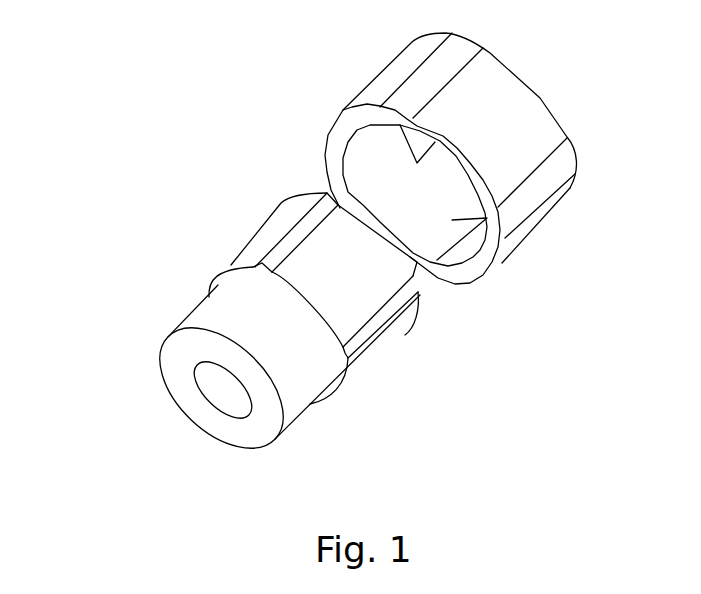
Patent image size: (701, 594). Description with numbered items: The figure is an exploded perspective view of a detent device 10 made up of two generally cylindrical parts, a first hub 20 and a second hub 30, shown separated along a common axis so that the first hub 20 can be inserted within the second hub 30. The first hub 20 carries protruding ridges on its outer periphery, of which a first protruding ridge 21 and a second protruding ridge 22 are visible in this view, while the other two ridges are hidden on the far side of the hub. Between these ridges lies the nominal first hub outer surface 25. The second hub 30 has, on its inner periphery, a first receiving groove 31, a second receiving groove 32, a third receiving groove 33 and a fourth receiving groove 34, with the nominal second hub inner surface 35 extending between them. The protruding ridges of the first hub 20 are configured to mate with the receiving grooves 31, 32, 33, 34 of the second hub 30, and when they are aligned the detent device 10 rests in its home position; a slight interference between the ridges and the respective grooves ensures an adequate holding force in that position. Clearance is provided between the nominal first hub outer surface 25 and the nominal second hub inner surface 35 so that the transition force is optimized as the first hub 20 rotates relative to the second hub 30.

The detent device 10 is at (186, 188).
The first hub 20 is at (359, 310).
The first protruding ridge 21 is at (280, 251).
The second protruding ridge 22 is at (357, 345).
The nominal first hub outer surface 25 is at (324, 280).
The second hub 30 is at (519, 145).
The first receiving groove 31 is at (437, 138).
The second receiving groove 32 is at (452, 220).
The third receiving groove 33 is at (445, 280).
The fourth receiving groove 34 is at (357, 167).
The nominal second hub inner surface 35 is at (397, 193).